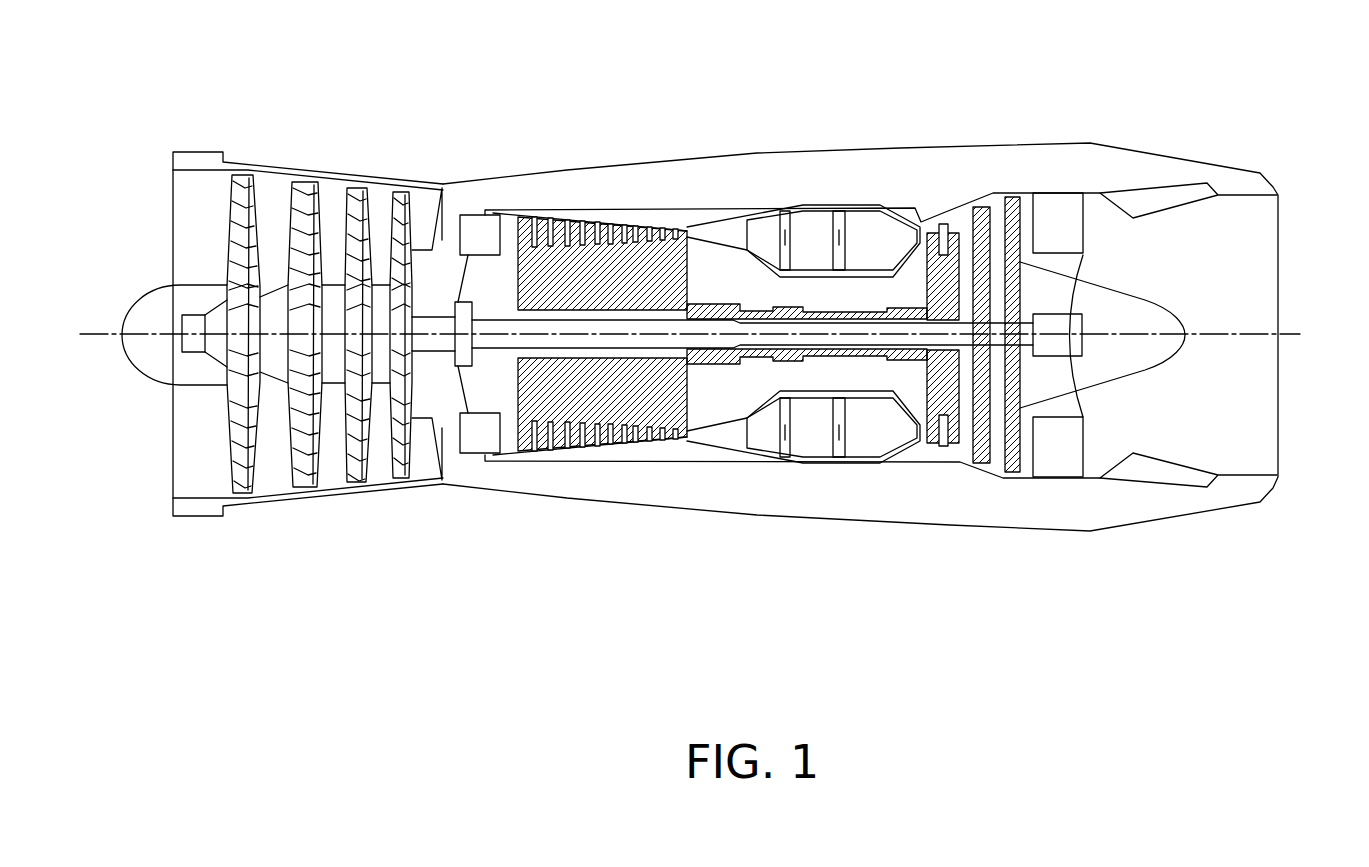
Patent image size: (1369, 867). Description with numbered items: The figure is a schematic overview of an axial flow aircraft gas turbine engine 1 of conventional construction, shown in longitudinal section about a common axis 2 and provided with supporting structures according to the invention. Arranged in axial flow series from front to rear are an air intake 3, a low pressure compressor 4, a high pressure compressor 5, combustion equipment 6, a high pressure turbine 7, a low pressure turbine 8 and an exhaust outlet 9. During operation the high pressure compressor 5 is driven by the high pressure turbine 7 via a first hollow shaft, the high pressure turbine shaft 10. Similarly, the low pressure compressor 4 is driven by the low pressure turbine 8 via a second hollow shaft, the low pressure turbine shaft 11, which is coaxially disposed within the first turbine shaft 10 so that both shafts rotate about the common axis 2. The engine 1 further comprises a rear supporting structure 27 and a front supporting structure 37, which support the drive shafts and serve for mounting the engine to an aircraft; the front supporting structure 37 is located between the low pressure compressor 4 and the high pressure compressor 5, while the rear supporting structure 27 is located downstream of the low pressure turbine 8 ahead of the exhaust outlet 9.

The gas turbine engine 1 is at (1037, 555).
The common axis 2 is at (103, 334).
The air intake 3 is at (197, 208).
The low pressure compressor 4 is at (337, 190).
The high pressure compressor 5 is at (585, 218).
The combustion equipment 6 is at (867, 215).
The high pressure turbine 7 is at (953, 227).
The low pressure turbine 8 is at (1010, 197).
The exhaust outlet 9 is at (1257, 228).
The high pressure turbine shaft 10 is at (700, 366).
The low pressure turbine shaft 11 is at (873, 341).
The rear supporting structure 27 is at (1062, 203).
The front supporting structure 37 is at (488, 225).